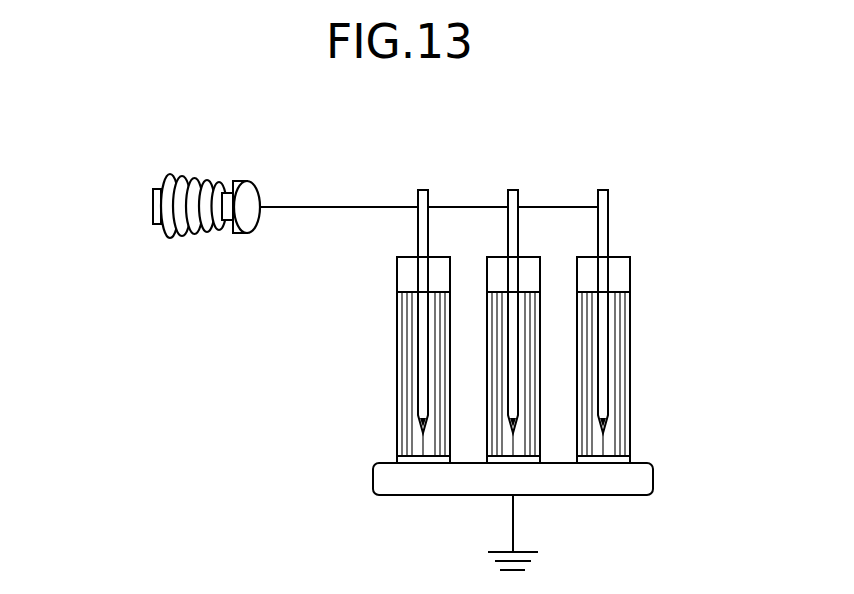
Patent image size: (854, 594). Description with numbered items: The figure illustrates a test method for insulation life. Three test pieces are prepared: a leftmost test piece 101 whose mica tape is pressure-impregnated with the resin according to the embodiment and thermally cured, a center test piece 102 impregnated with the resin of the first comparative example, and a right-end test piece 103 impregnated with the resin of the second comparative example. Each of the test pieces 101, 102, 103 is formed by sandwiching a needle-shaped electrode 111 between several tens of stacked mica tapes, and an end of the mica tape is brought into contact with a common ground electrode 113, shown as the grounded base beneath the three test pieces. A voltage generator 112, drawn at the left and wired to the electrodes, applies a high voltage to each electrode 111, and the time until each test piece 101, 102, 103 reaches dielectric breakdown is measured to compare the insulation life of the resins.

The test piece 101 is at (384, 278).
The test piece 102 is at (475, 274).
The test piece 103 is at (565, 275).
The needle-shaped electrode 111 is at (603, 188).
The voltage generator 112 is at (152, 201).
The ground electrode 113 is at (630, 456).